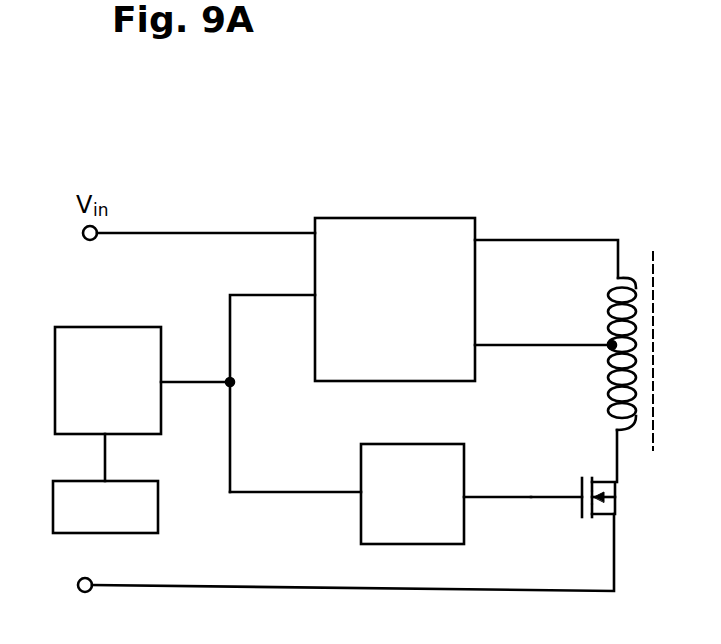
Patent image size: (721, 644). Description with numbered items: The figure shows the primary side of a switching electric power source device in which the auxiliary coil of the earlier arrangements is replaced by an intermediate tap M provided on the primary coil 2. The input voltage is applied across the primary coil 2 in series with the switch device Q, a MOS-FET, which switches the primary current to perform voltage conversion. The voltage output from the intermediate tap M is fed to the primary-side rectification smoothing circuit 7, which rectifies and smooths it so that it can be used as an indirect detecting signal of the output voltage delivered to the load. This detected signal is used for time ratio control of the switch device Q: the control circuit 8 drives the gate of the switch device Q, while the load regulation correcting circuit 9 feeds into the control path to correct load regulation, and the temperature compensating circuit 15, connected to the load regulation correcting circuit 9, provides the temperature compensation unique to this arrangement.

The primary coil 2 is at (636, 322).
The primary-side rectification smoothing circuit 7 is at (475, 270).
The control circuit 8 is at (464, 470).
The load regulation correcting circuit 9 is at (105, 327).
The temperature compensating circuit 15 is at (158, 516).
The intermediate tap M is at (610, 344).
The switch device Q is at (617, 503).